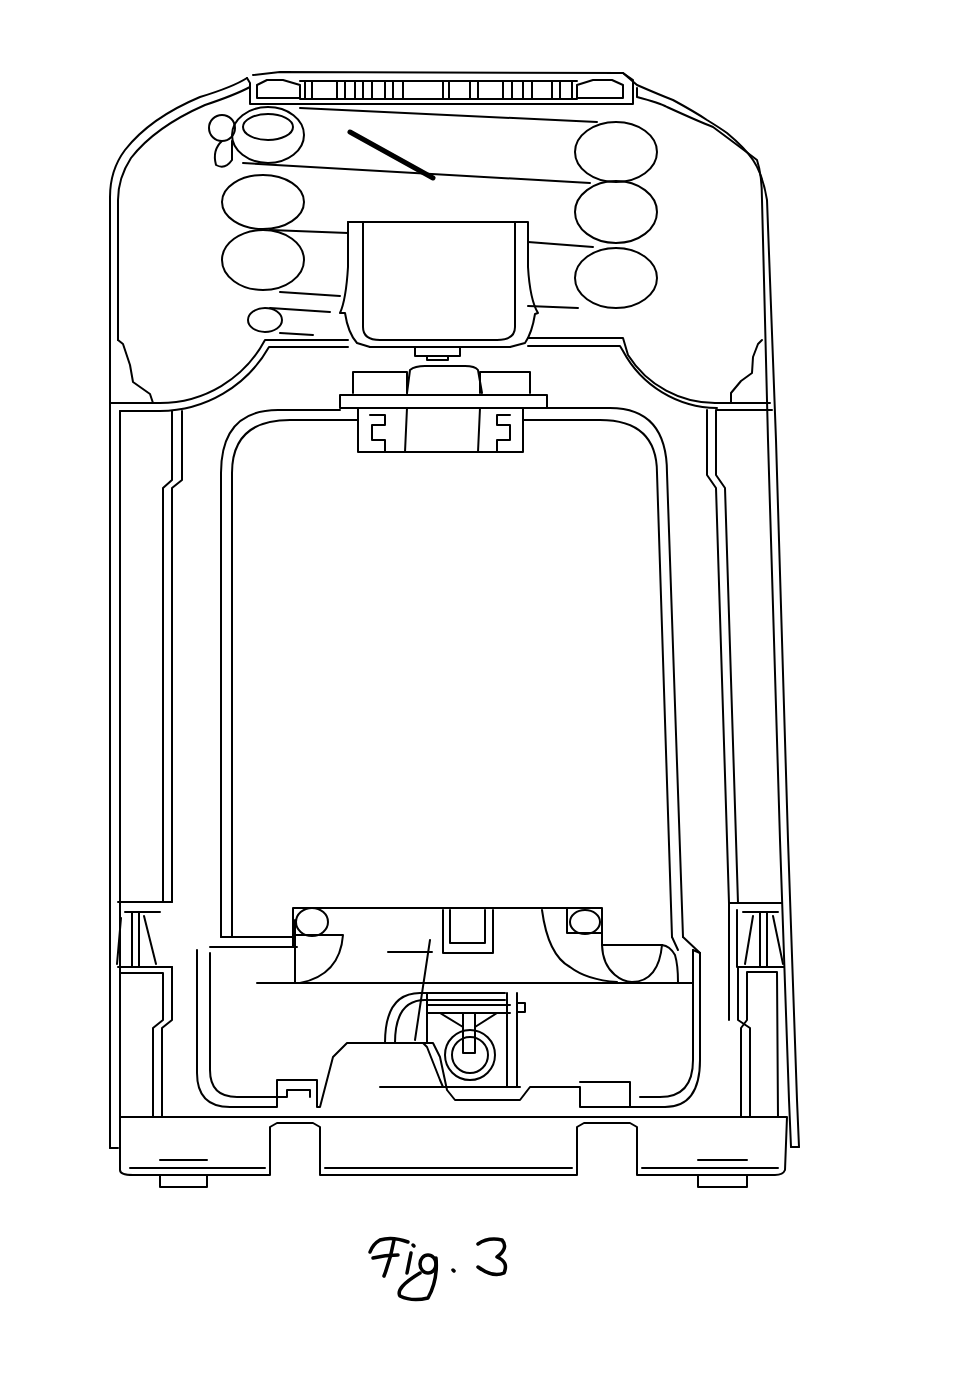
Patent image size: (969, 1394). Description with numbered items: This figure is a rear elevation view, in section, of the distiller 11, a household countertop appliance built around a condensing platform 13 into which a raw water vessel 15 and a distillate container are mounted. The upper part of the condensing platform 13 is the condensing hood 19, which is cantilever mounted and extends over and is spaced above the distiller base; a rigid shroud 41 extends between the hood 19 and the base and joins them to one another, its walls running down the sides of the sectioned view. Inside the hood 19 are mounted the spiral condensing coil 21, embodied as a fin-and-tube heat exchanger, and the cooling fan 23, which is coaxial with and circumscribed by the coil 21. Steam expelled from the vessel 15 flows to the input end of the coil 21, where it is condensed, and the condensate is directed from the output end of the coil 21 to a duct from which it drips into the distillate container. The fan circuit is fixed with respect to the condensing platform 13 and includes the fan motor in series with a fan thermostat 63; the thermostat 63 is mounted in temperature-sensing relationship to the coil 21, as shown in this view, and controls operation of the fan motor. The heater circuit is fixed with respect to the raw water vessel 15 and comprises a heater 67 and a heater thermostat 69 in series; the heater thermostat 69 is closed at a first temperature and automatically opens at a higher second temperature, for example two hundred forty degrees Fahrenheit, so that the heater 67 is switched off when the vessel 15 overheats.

The distiller 11 is at (228, 64).
The condensing platform 13 is at (773, 222).
The raw water vessel 15 is at (680, 438).
The condensing hood 19 is at (670, 93).
The spiral condensing coil 21 is at (640, 215).
The cooling fan 23 is at (393, 153).
The rigid shroud 41 is at (777, 502).
The fan thermostat 63 is at (212, 128).
The heater 67 is at (587, 920).
The heater thermostat 69 is at (467, 908).